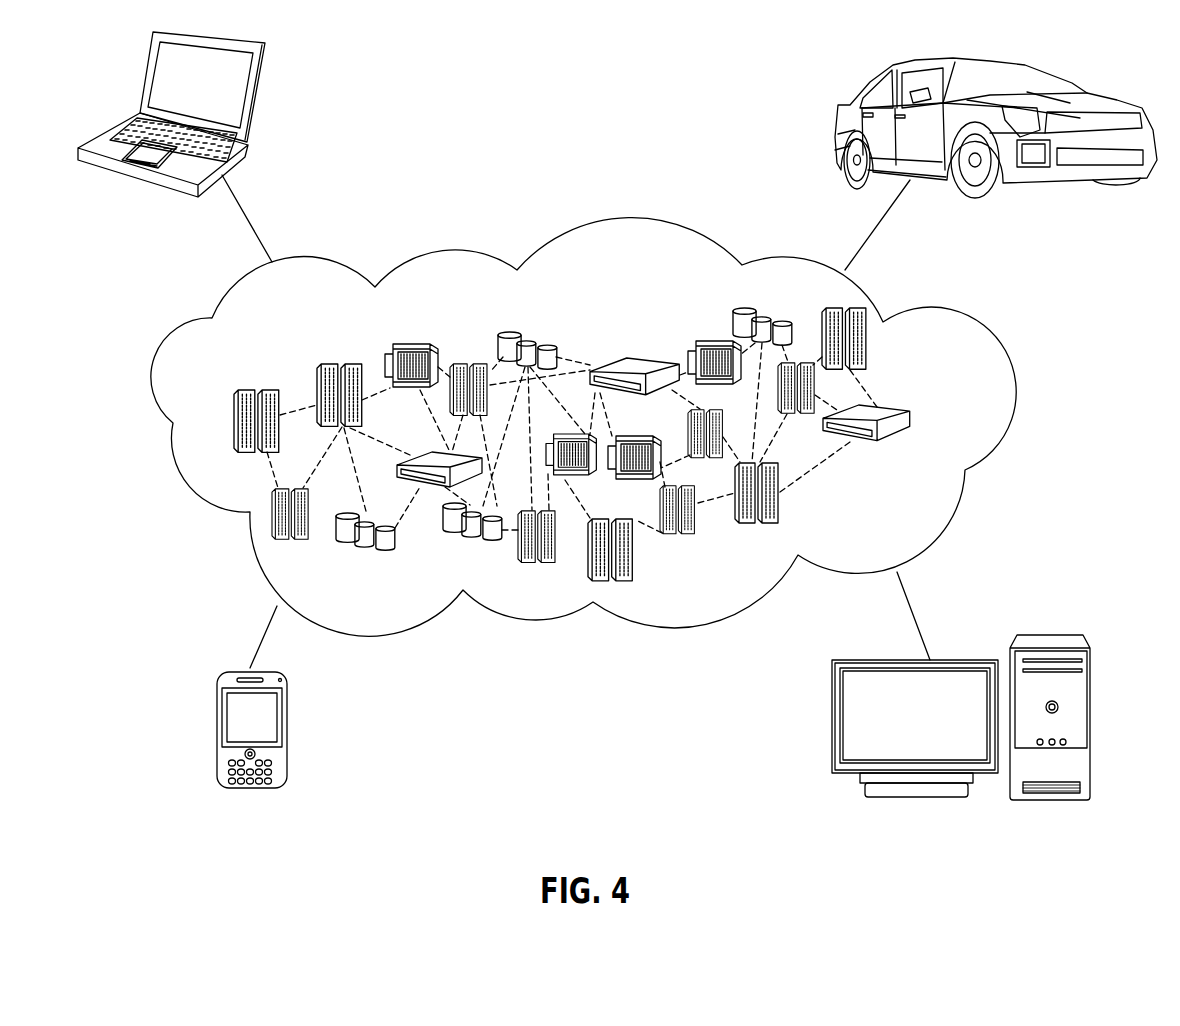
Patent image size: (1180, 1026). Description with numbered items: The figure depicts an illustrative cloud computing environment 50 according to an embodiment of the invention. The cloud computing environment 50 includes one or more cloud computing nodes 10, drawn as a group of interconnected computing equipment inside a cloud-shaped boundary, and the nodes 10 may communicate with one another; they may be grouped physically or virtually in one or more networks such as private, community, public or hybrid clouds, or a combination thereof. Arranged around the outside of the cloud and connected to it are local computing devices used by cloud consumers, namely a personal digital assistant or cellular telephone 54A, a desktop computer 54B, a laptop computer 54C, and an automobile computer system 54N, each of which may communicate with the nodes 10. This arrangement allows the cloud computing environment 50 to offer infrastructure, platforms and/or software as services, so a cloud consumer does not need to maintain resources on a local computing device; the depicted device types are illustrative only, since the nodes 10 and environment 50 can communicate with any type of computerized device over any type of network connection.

The cloud computing node 10 is at (942, 420).
The cloud computing environment 50 is at (980, 328).
The personal digital assistant or cellular telephone 54A is at (220, 735).
The desktop computer 54B is at (1057, 635).
The laptop computer 54C is at (257, 100).
The automobile computer system 54N is at (843, 110).